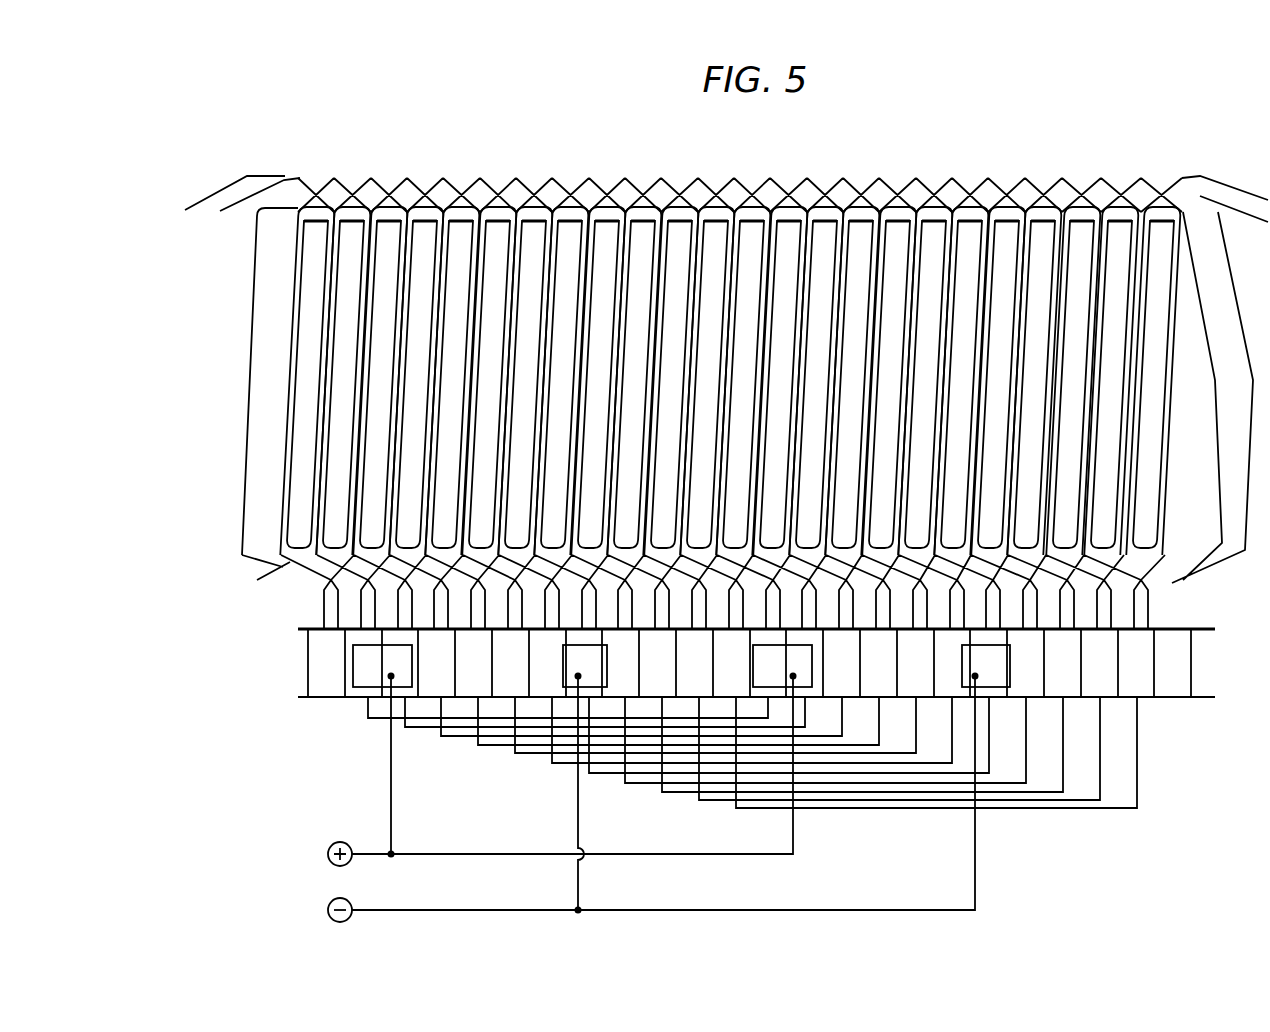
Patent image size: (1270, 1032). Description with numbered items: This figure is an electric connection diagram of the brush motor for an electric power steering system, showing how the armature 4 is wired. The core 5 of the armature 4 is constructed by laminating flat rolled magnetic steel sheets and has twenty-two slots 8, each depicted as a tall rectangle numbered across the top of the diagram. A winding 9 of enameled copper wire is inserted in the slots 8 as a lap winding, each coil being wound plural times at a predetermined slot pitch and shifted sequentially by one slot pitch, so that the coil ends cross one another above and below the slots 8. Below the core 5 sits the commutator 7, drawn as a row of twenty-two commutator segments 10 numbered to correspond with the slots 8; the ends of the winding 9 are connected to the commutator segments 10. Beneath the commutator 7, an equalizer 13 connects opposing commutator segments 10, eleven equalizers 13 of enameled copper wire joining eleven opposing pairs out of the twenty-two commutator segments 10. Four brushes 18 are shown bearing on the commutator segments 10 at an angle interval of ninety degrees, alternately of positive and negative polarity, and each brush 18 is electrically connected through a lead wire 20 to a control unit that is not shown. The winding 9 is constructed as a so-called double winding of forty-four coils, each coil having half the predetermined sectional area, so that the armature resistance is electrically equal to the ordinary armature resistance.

The armature 4 is at (198, 385).
The core 5 is at (298, 497).
The commutator 7 is at (283, 664).
The slot 8 is at (1149, 214).
The winding 9 is at (586, 178).
The commutator segment 10 is at (478, 699).
The equalizer 13 is at (905, 801).
The brush 18 is at (362, 699).
The lead wire 20 is at (790, 908).